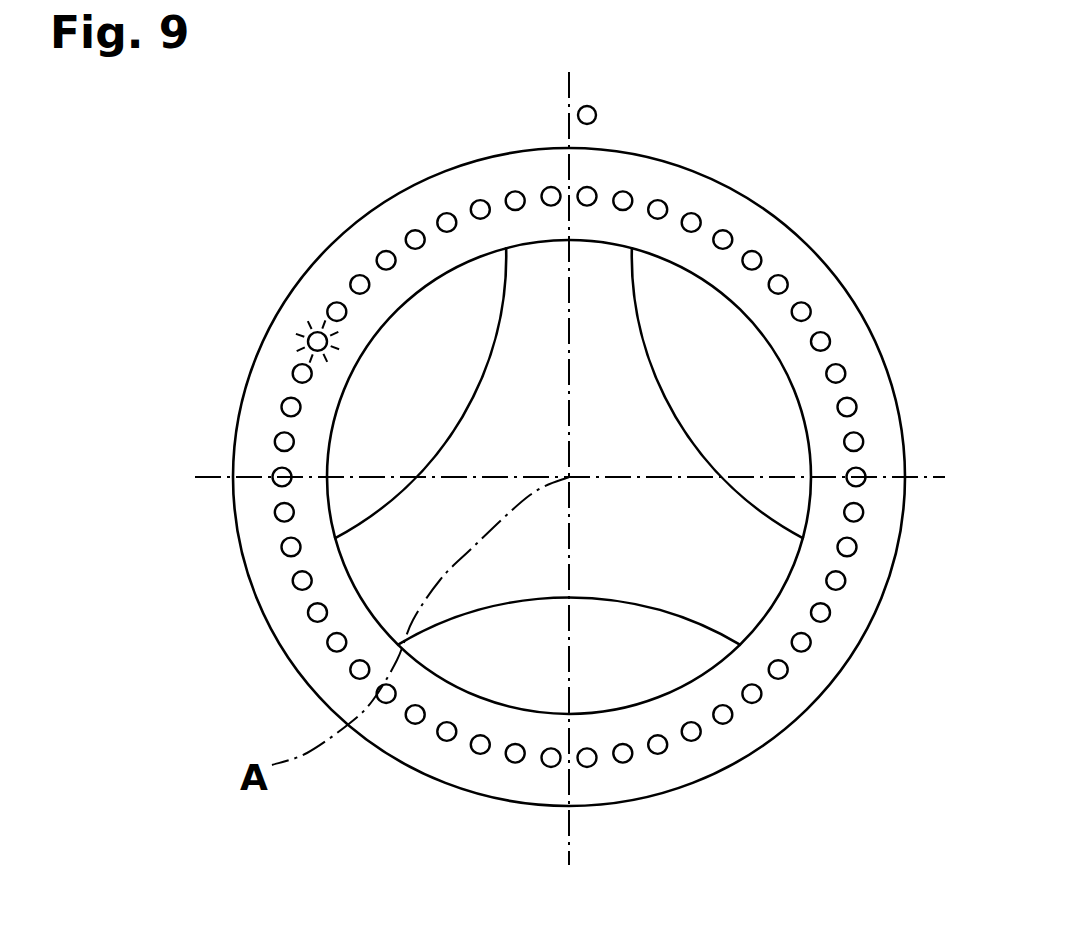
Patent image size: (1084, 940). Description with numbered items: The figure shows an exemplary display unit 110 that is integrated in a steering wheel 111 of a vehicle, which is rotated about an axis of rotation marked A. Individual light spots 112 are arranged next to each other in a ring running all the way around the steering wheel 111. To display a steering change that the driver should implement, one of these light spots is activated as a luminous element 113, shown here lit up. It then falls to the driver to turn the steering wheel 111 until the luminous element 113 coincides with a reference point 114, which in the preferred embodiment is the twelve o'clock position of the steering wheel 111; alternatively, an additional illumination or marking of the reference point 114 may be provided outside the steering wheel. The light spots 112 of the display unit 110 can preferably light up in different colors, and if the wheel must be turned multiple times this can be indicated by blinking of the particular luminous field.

The display unit 110 is at (500, 477).
The steering wheel 111 is at (265, 597).
The light spots 112 is at (405, 230).
The luminous element 113 is at (308, 336).
The reference point 114 is at (596, 114).